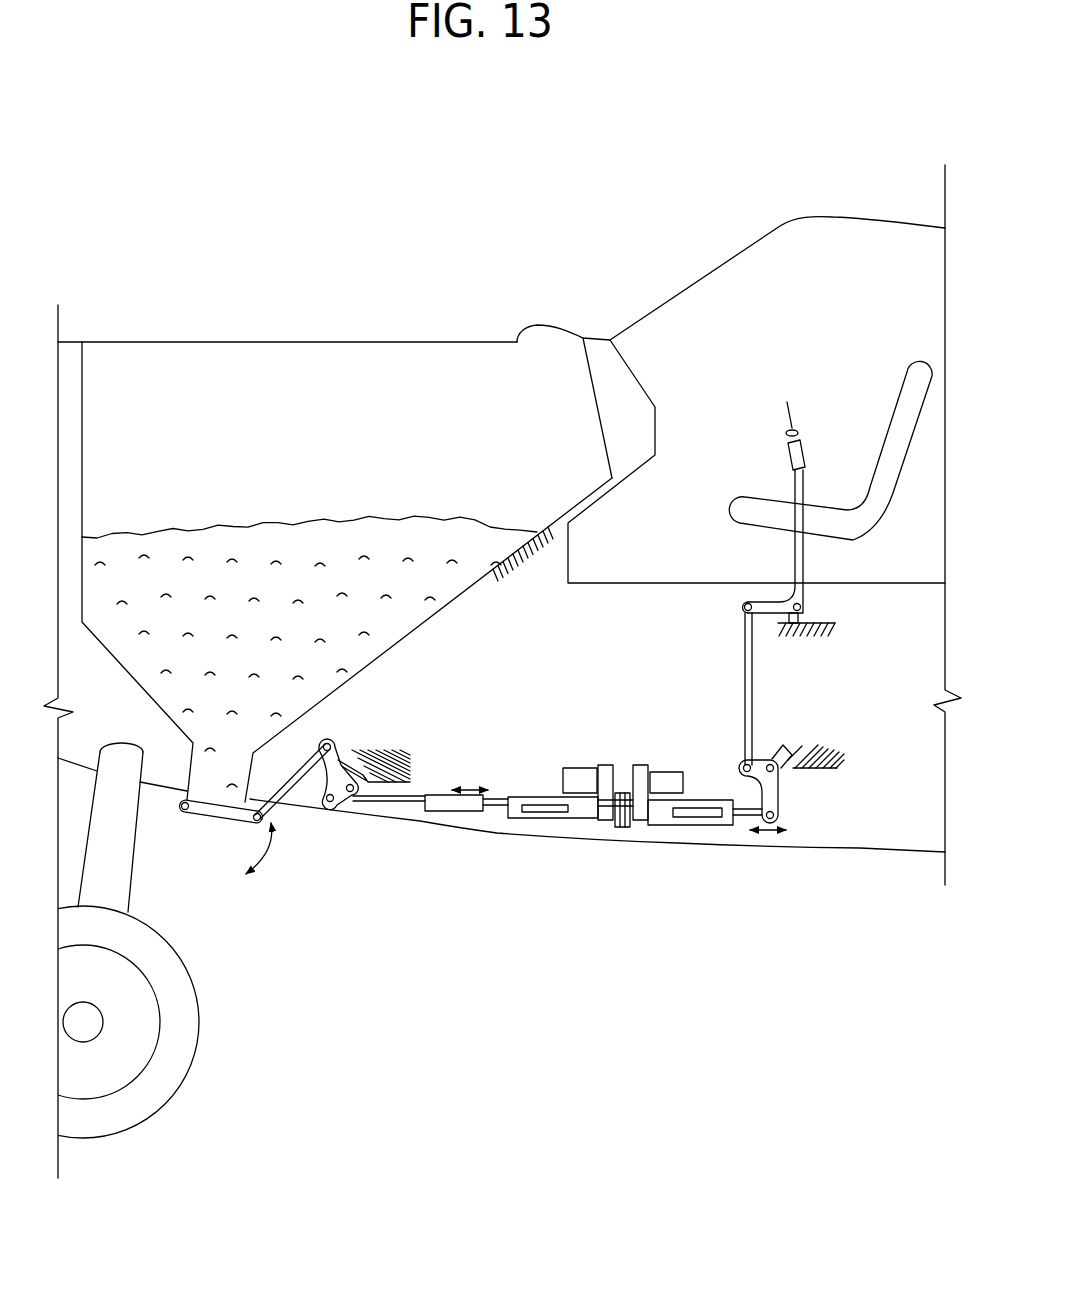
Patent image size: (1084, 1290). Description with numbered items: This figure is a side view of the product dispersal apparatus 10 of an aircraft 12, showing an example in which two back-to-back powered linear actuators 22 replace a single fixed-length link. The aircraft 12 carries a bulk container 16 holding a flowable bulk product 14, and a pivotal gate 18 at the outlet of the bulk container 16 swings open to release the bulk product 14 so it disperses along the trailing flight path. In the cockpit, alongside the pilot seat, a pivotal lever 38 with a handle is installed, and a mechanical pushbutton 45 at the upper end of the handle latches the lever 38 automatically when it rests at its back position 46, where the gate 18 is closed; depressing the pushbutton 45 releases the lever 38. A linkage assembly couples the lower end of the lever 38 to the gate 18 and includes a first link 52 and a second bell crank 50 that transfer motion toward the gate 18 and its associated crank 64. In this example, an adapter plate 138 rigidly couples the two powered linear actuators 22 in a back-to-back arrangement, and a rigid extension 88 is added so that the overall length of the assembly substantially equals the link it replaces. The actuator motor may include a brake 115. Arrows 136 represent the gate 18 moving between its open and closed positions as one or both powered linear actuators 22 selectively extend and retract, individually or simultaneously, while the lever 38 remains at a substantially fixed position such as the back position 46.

The product dispersal apparatus 10 is at (215, 193).
The aircraft 12 is at (737, 256).
The flowable bulk product 14 is at (250, 523).
The bulk container 16 is at (398, 650).
The pivotal gate 18 is at (210, 816).
The powered linear actuator 22 is at (522, 797).
The pivotal lever 38 is at (806, 492).
The mechanical pushbutton 45 is at (802, 430).
The back position 46 is at (787, 415).
The second bell crank 50 is at (778, 797).
The first link 52 is at (755, 671).
The gate bellcrank 64 is at (345, 750).
The rigid extension 88 is at (387, 810).
The brake 115 is at (594, 768).
The arrows 136 is at (473, 785).
The adapter plate 138 is at (625, 828).